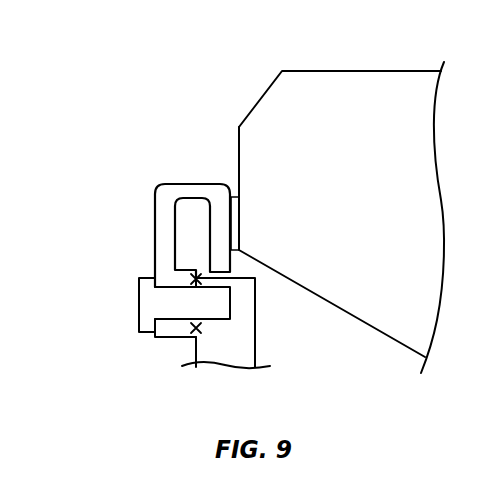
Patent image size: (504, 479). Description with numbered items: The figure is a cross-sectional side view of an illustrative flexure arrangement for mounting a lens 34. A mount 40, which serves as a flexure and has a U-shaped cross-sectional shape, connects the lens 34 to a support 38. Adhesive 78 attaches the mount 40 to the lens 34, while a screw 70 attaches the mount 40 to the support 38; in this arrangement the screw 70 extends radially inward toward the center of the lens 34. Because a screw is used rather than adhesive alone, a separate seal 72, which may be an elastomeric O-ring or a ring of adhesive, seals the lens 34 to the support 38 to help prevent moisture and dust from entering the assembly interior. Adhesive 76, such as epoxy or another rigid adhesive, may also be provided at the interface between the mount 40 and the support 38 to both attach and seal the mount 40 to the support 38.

The lens 34 is at (358, 80).
The support 38 is at (255, 336).
The mount 40 is at (168, 184).
The screw 70 is at (139, 306).
The seal 72 is at (192, 279).
The adhesive 76 is at (196, 343).
The adhesive 78 is at (233, 197).